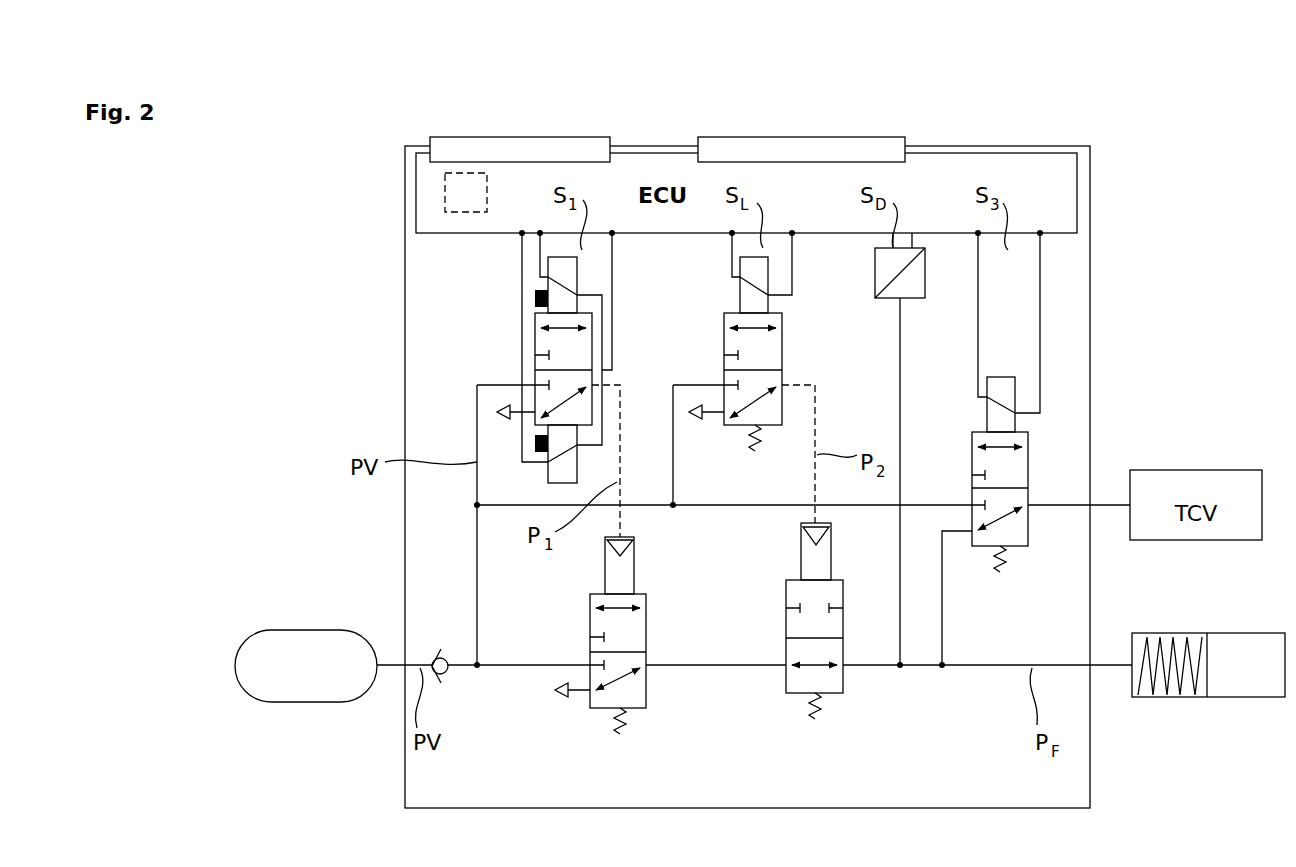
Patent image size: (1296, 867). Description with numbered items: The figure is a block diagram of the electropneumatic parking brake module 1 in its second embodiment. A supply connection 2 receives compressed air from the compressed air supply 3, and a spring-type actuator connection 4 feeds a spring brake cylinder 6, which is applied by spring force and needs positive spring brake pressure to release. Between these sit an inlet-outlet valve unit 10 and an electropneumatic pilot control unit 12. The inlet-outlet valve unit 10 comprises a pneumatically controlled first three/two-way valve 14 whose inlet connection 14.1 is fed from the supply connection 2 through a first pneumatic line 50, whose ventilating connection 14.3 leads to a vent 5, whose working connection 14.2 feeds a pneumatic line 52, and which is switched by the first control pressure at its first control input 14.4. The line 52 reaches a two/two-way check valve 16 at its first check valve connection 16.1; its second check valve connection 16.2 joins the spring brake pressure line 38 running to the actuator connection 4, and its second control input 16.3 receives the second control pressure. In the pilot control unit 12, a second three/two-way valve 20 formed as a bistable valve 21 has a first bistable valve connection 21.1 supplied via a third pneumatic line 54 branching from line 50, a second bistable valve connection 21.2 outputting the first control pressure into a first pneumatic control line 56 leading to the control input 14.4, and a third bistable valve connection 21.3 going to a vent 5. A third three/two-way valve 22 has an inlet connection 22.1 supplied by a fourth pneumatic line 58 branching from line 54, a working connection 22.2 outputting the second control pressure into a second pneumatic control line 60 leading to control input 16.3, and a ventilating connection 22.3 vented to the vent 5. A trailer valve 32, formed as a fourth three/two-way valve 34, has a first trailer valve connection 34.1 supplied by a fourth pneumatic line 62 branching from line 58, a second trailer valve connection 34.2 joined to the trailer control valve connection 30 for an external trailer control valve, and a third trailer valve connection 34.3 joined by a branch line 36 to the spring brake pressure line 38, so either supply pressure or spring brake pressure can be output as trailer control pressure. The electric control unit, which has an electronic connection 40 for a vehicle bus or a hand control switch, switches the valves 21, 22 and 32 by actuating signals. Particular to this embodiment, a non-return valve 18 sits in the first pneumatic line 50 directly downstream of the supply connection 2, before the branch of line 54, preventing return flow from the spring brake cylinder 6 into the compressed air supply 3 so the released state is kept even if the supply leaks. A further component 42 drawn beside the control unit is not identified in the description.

The electropneumatic parking brake module 1 is at (352, 168).
The supply connection 2 is at (405, 666).
The compressed air supply 3 is at (310, 687).
The spring-type actuator connection 4 is at (1090, 666).
The vent 5 is at (497, 410).
The spring brake cylinder 6 is at (1207, 698).
The inlet-outlet valve unit 10 is at (777, 740).
The electropneumatic pilot control unit 12 is at (428, 280).
The first 3/2-way valve 14 is at (594, 646).
The inlet connection 14.1 is at (590, 658).
The working connection 14.2 is at (645, 668).
The ventilating connection 14.3 is at (595, 692).
The first control input 14.4 is at (605, 560).
The 2/2-way check valve 16 is at (799, 629).
The first check valve connection 16.1 is at (786, 664).
The second check valve connection 16.2 is at (845, 668).
The second control input 16.3 is at (801, 560).
The non-return valve 18 is at (441, 648).
The second 3/2-way valve 20 is at (535, 300).
The bistable valve 21 is at (535, 328).
The first bistable valve connection 21.1 is at (535, 385).
The second bistable valve connection 21.2 is at (602, 385).
The third bistable valve connection 21.3 is at (532, 408).
The third 3/2-way valve 22 is at (735, 303).
The inlet connection 22.1 is at (724, 386).
The working connection 22.2 is at (782, 388).
The ventilating connection 22.3 is at (735, 400).
The trailer control valve connection 30 is at (1090, 507).
The trailer valve 32 is at (972, 432).
The fourth 3/2-way valve 34 is at (1018, 432).
The first trailer valve connection 34.1 is at (972, 504).
The second trailer valve connection 34.2 is at (1028, 504).
The third trailer valve connection 34.3 is at (975, 531).
The branch line 36 is at (942, 635).
The spring brake pressure line 38 is at (975, 668).
The electronic connection 40 is at (465, 190).
The pressure sensor 42 is at (925, 273).
The first pneumatic line 50 is at (463, 668).
The pneumatic line 52 is at (720, 668).
The third pneumatic line 54 is at (477, 492).
The first pneumatic control line 56 is at (618, 483).
The fourth pneumatic line 58 is at (506, 508).
The second pneumatic control line 60 is at (817, 390).
The fourth pneumatic line 62 is at (789, 492).